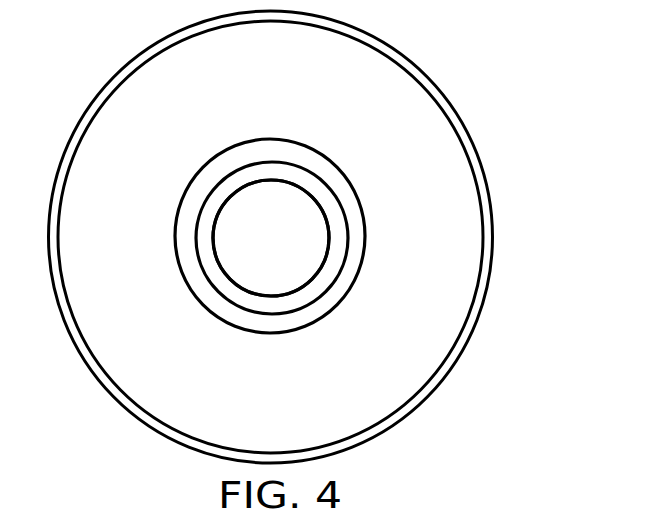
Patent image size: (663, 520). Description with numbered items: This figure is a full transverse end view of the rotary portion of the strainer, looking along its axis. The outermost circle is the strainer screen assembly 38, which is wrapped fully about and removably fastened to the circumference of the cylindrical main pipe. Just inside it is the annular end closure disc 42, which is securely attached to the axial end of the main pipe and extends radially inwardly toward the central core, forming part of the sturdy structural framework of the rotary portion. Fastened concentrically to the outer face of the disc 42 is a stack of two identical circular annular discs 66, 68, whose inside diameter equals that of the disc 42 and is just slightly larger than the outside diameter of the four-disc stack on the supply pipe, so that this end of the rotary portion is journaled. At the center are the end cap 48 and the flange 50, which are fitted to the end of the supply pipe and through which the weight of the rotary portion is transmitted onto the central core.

The strainer screen assembly 38 is at (462, 130).
The annular end closure disc 42 is at (450, 295).
The circular annular disc 66 is at (367, 222).
The circular annular disc 68 is at (368, 242).
The end cap 48 is at (285, 246).
The flange 50 is at (307, 293).